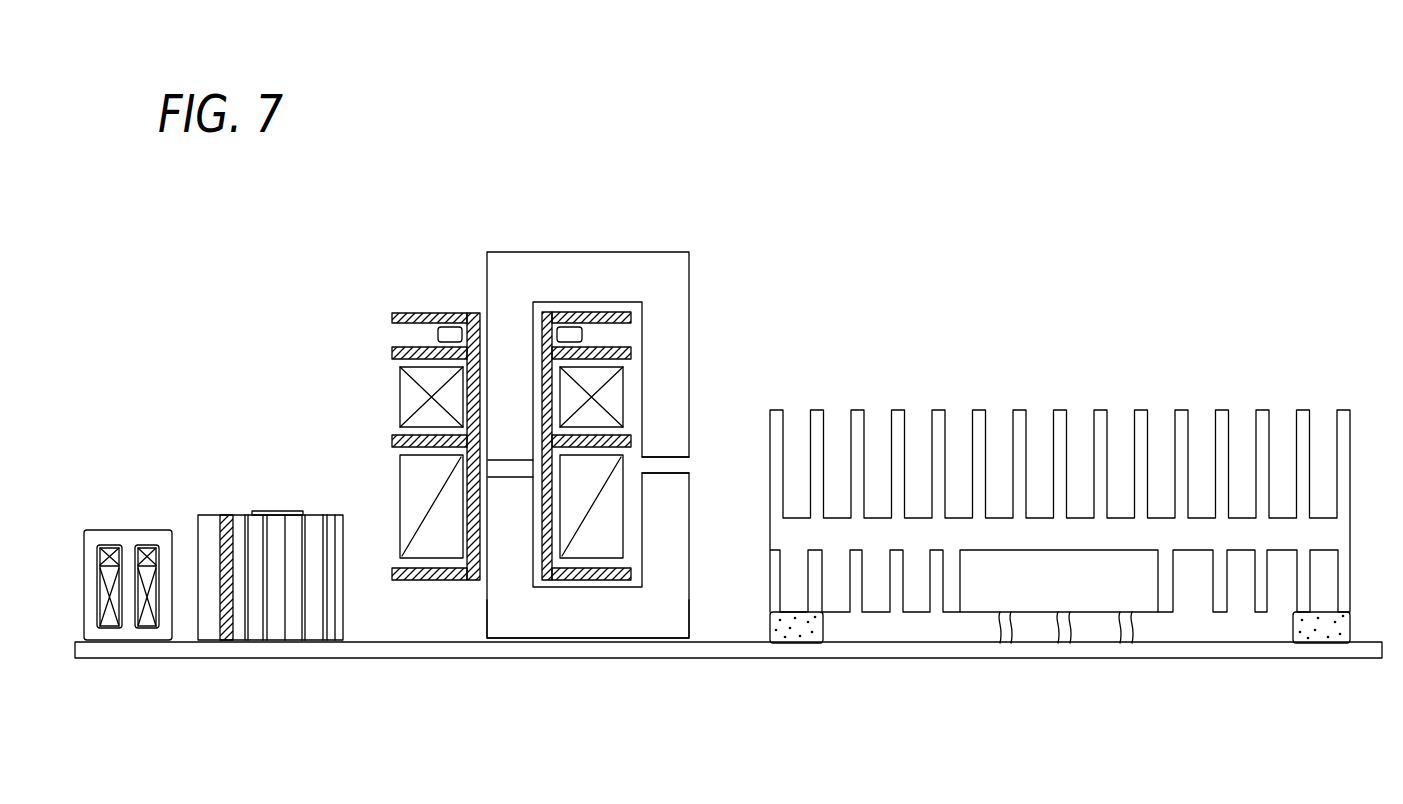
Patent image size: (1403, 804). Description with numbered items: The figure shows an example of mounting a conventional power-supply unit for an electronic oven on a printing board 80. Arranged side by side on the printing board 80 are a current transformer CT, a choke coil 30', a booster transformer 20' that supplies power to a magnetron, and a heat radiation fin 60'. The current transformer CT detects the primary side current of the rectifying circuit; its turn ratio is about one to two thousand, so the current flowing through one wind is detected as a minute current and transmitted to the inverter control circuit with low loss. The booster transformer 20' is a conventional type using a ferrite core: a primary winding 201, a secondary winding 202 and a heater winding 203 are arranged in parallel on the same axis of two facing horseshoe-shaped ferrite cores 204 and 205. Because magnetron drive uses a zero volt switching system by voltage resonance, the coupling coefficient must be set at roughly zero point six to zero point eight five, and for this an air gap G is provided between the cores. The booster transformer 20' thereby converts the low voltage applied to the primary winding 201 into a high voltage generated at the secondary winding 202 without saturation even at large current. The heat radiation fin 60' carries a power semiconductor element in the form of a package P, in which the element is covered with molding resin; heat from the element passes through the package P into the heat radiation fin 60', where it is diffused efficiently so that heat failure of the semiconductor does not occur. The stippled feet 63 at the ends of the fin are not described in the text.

The booster transformer 20' is at (534, 436).
The primary winding 201 is at (570, 502).
The secondary winding 202 is at (573, 400).
The heater winding 203 is at (567, 328).
The horseshoe-shaped ferrite core 204 is at (672, 262).
The horseshoe-shaped ferrite core 205 is at (662, 615).
The air gap G is at (690, 465).
The choke coil 30' is at (270, 522).
The current transformer CT is at (132, 527).
The heat radiation fin 60' is at (1060, 508).
The mounting pad 63 is at (790, 637).
The package P is at (982, 598).
The printing board 80 is at (1188, 660).